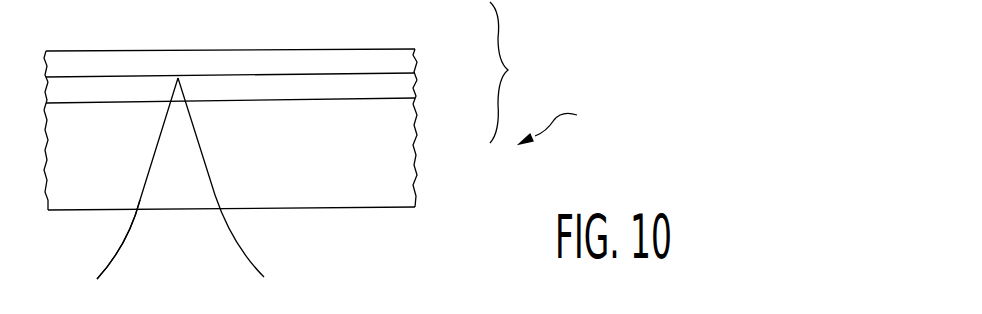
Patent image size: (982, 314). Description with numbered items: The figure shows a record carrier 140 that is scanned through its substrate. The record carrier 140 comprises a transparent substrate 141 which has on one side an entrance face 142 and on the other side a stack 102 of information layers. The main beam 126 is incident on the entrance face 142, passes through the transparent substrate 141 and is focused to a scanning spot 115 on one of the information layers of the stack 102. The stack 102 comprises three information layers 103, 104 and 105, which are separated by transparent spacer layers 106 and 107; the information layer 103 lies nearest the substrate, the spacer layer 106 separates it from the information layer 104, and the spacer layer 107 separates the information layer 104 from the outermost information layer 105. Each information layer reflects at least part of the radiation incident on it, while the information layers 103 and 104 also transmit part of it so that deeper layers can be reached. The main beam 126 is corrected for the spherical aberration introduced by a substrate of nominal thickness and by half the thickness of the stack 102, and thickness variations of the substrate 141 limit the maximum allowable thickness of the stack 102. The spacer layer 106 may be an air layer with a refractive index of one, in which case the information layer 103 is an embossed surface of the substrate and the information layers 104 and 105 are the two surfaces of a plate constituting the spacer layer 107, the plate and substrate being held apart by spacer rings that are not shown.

The stack 102 is at (548, 84).
The information layer 103 is at (410, 100).
The information layer 104 is at (401, 73).
The information layer 105 is at (400, 50).
The spacer layer 106 is at (405, 85).
The spacer layer 107 is at (401, 60).
The scanning spot 115 is at (178, 78).
The main beam 126 is at (117, 247).
The record carrier 140 is at (617, 129).
The transparent substrate 141 is at (392, 172).
The entrance face 142 is at (337, 208).